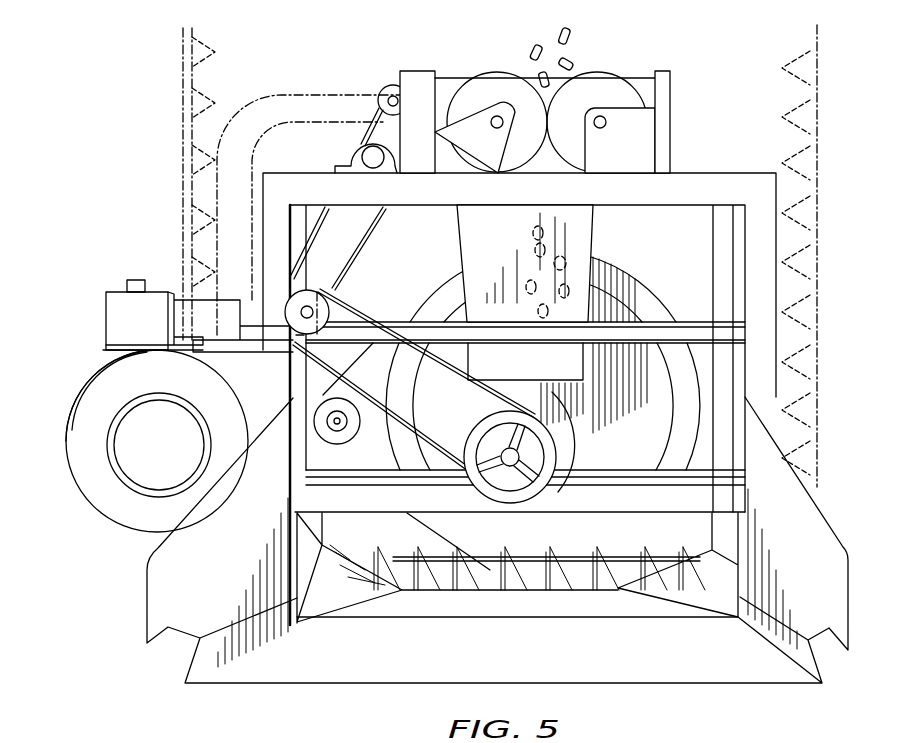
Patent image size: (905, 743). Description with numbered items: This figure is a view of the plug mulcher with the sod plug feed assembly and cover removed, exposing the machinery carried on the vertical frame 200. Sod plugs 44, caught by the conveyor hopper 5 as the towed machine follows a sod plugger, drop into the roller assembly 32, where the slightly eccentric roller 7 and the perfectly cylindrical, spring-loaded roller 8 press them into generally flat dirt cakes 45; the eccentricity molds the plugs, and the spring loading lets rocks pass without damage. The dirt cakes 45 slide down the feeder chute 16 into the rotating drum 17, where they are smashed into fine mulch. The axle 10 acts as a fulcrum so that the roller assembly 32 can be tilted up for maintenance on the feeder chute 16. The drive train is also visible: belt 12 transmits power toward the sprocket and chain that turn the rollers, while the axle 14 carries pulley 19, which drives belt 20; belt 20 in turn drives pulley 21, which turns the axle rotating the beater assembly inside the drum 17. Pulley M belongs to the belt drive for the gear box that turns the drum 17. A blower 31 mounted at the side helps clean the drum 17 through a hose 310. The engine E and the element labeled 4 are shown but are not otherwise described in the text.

The fuel tank 4 is at (118, 313).
The conveyor hopper 5 is at (183, 228).
The roller 7 is at (608, 98).
The roller 8 is at (480, 100).
The axle 10 is at (362, 155).
The belt 12 is at (383, 223).
The axle 14 is at (306, 312).
The feeder chute 16 is at (588, 228).
The drum 17 is at (634, 302).
The pulley 19 is at (310, 333).
The belt 20 is at (458, 368).
The pulley 21 is at (470, 445).
The blower 31 is at (96, 435).
The roller assembly 32 is at (668, 92).
The sod plugs 44 is at (572, 45).
The dirt cakes 45 is at (530, 236).
The vertical frame 200 is at (688, 188).
The hose 310 is at (278, 110).
The engine E is at (383, 102).
The pulley M is at (546, 488).